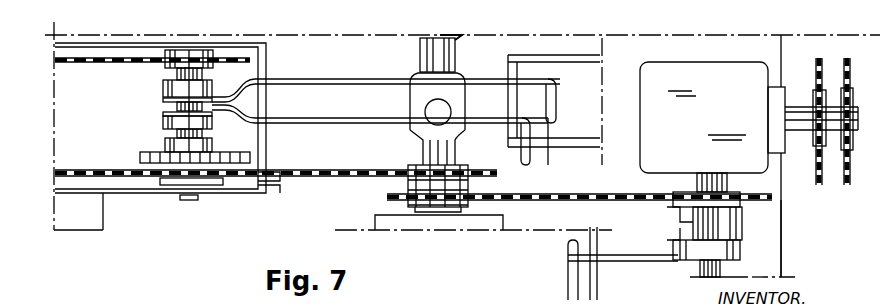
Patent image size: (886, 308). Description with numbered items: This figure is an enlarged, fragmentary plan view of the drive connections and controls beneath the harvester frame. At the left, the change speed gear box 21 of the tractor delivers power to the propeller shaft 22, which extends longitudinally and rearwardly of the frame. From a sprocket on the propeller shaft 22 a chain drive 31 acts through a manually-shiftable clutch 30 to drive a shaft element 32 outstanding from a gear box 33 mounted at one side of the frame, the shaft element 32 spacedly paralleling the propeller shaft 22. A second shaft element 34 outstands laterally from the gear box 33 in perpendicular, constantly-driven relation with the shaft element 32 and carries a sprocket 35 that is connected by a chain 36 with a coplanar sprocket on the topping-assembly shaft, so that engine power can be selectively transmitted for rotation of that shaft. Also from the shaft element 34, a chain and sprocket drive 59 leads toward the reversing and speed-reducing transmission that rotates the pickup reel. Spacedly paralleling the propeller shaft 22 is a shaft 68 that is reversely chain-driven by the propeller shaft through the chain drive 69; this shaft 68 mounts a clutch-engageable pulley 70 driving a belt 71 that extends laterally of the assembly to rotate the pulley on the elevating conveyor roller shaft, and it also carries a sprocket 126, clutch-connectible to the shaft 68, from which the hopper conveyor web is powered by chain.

The change speed gear box 21 is at (463, 228).
The propeller shaft 22 is at (460, 146).
The manually-shiftable clutch 30 is at (676, 228).
The chain drive 31 is at (561, 195).
The shaft element 32 is at (705, 176).
The gear box 33 is at (704, 117).
The shaft element 34 is at (785, 118).
The sprocket 35 is at (818, 98).
The chain 36 is at (788, 236).
The chain and sprocket drive 59 is at (847, 62).
The shaft 68 is at (168, 131).
The chain drive 69 is at (344, 168).
The clutch-engageable pulley 70 is at (246, 152).
The belt 71 is at (79, 165).
The sprocket 126 is at (183, 65).